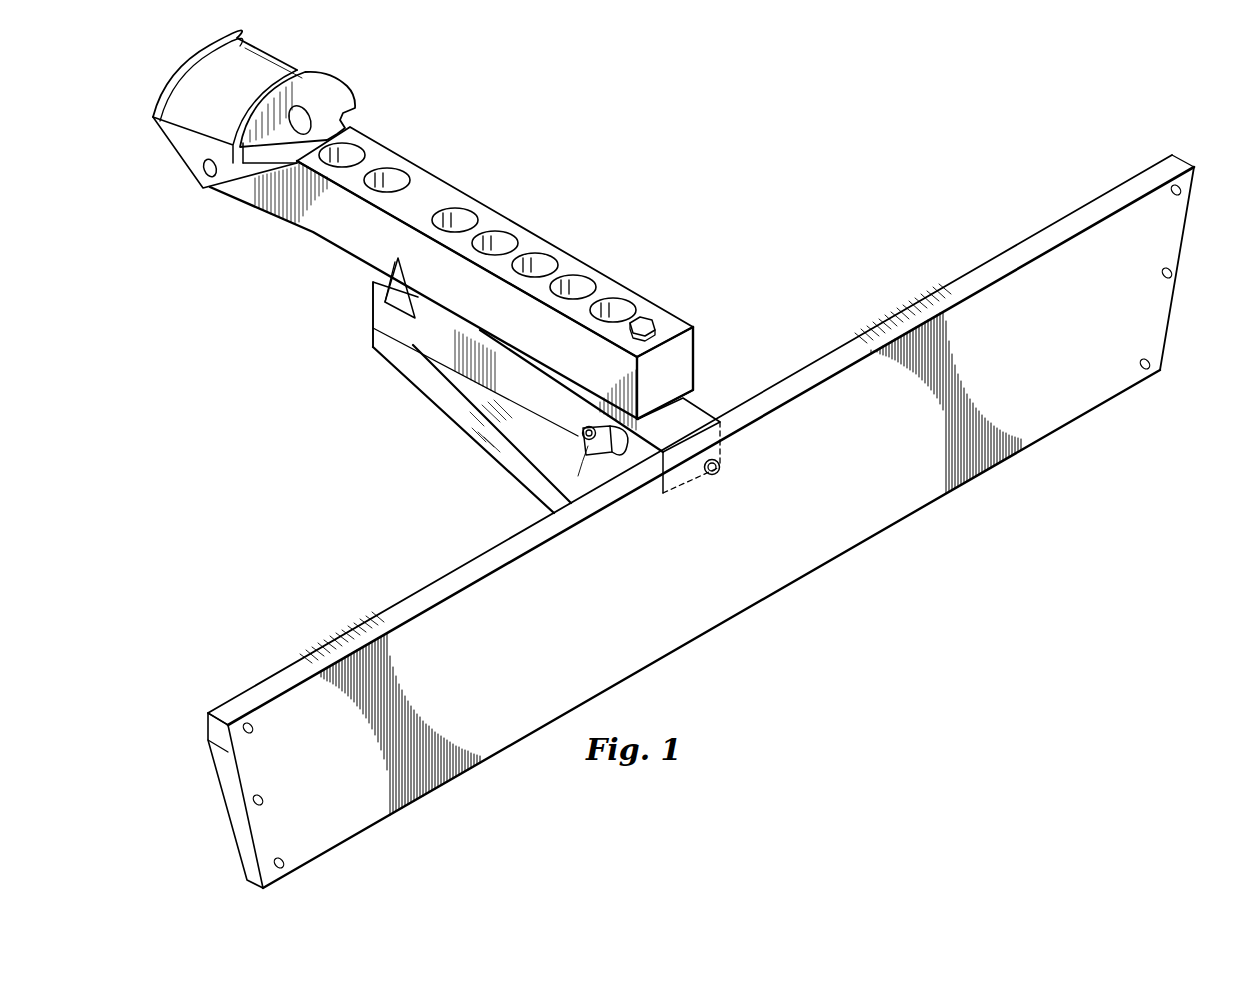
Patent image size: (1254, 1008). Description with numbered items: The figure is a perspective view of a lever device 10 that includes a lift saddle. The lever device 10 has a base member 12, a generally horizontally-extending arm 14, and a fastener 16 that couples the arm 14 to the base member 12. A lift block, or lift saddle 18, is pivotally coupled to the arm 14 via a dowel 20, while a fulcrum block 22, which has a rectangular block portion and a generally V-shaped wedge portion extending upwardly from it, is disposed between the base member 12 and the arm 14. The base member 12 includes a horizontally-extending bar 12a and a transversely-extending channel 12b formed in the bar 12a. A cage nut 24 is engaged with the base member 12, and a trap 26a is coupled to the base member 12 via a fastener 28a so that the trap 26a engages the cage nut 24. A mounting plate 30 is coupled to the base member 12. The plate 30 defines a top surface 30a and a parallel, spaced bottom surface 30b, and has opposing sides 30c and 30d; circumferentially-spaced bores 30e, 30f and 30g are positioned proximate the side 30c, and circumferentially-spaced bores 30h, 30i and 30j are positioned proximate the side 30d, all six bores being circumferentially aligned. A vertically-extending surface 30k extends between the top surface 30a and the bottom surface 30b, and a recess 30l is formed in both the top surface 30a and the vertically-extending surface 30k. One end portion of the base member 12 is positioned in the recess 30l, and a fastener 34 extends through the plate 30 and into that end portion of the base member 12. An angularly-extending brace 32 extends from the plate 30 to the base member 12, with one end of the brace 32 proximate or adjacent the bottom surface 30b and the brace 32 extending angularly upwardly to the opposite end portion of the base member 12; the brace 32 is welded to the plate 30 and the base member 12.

The lever device 10 is at (775, 133).
The base member 12 is at (523, 364).
The horizontally-extending bar 12a is at (697, 412).
The transversely-extending channel 12b is at (373, 292).
The horizontally-extending arm 14 is at (444, 180).
The fastener 16 is at (645, 318).
The lift saddle 18 is at (352, 93).
The dowel 20 is at (204, 176).
The fulcrum block 22 is at (401, 319).
The cage nut 24 is at (633, 449).
The trap 26a is at (592, 441).
The fastener 28a is at (589, 440).
The mounting plate 30 is at (701, 521).
The top surface 30a is at (1070, 218).
The bottom surface 30b is at (744, 612).
The side 30c is at (232, 806).
The side 30d is at (1178, 312).
The bore 30e is at (253, 727).
The bore 30f is at (263, 798).
The bore 30g is at (284, 860).
The bore 30h is at (1172, 196).
The bore 30i is at (1162, 277).
The bore 30j is at (1140, 364).
The vertically-extending surface 30k is at (952, 275).
The recess 30l is at (684, 498).
The angularly-extending brace 32 is at (457, 410).
The fastener 34 is at (720, 471).